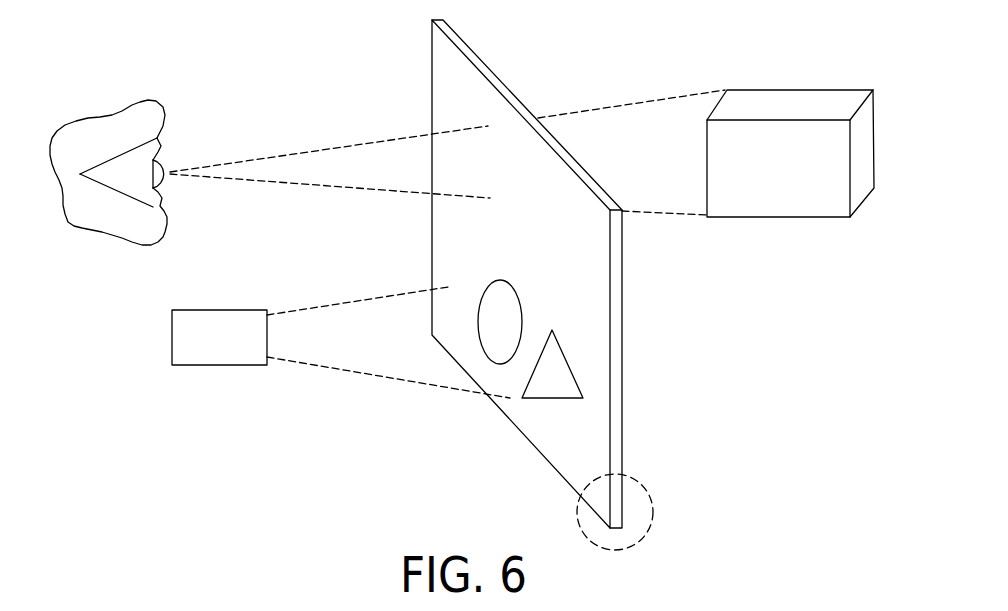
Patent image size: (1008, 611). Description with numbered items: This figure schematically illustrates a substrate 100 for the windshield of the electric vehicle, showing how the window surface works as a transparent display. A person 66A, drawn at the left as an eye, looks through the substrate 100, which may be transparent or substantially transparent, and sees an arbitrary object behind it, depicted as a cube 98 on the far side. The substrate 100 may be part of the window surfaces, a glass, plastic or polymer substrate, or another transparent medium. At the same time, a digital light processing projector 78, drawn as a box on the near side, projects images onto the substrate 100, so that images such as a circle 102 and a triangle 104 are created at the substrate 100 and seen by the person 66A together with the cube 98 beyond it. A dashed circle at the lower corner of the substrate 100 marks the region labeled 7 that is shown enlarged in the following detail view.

The person 66A is at (137, 118).
The substrate 100 is at (492, 73).
The cube 98 is at (793, 180).
The digital light processing projector 78 is at (233, 350).
The circle 102 is at (492, 318).
The triangle 104 is at (552, 390).
The detail view reference for FIG. 7 is at (641, 481).